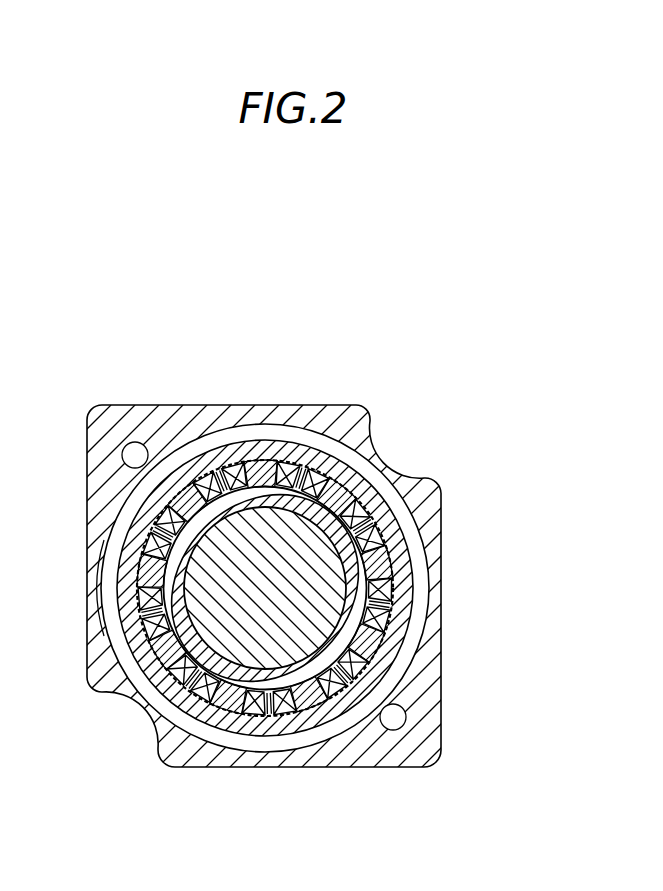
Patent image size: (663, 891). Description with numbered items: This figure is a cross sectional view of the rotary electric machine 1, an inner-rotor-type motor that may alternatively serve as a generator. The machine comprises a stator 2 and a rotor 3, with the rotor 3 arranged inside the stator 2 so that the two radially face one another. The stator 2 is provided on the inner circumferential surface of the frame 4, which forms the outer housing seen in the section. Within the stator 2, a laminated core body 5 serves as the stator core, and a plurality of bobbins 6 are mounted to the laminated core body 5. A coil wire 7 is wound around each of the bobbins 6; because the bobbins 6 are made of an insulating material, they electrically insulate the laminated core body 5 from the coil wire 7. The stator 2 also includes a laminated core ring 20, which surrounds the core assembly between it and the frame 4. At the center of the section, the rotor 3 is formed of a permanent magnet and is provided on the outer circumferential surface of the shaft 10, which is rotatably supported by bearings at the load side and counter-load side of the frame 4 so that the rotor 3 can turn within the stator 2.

The rotary electric machine 1 is at (430, 424).
The stator 2 is at (503, 537).
The rotor 3 is at (106, 578).
The frame 4 is at (141, 405).
The laminated core body 5 is at (404, 584).
The bobbins 6 is at (409, 594).
The coil wire 7 is at (389, 533).
The shaft 10 is at (290, 640).
The laminated core ring 20 is at (256, 421).